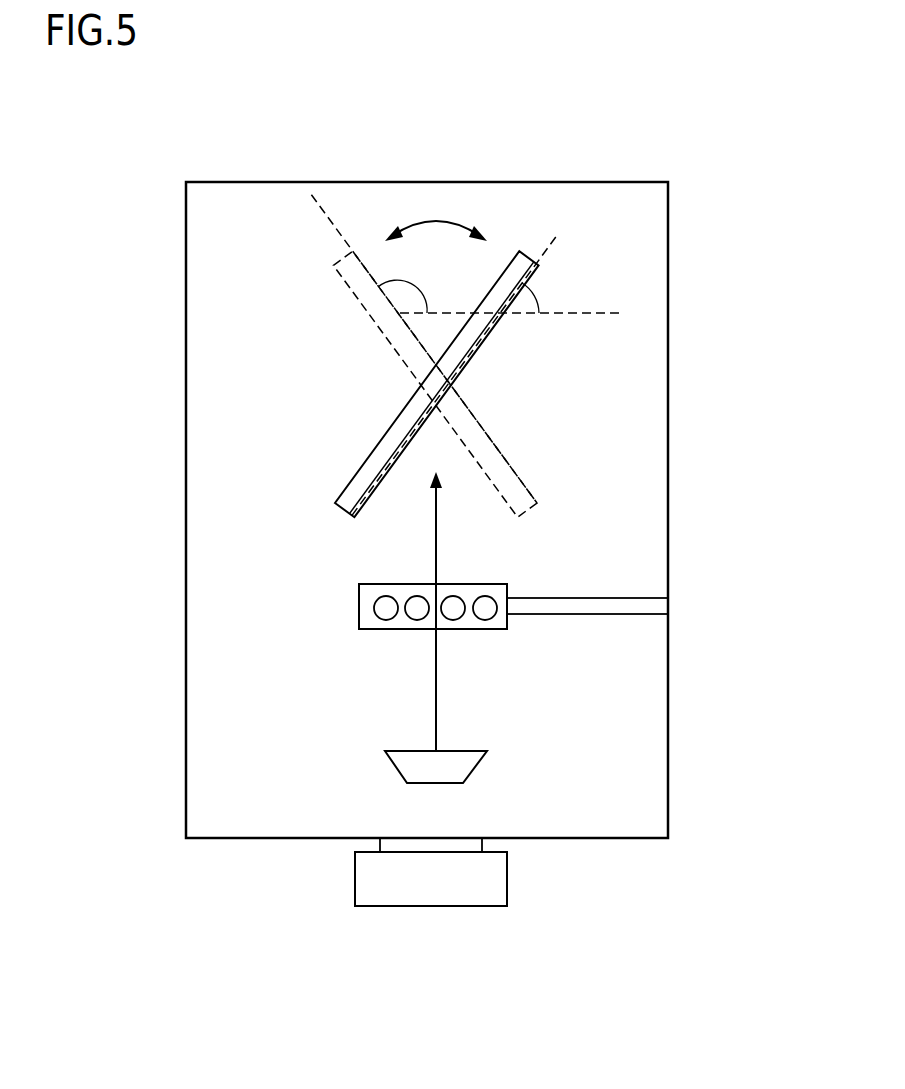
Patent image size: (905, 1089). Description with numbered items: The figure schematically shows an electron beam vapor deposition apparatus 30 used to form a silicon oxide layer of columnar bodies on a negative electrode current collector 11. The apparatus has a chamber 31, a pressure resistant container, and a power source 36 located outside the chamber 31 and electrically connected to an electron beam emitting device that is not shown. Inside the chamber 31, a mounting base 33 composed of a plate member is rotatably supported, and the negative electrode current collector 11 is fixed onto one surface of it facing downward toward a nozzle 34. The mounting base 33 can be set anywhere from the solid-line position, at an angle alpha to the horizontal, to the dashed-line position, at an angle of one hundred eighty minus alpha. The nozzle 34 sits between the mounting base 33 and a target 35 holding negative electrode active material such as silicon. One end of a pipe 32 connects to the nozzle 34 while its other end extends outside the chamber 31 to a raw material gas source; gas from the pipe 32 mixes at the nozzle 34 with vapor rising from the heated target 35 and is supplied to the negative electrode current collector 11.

The vapor deposition apparatus 30 is at (627, 150).
The chamber 31 is at (669, 303).
The pipe 32 is at (623, 607).
The mounting base 33 is at (518, 266).
The negative electrode current collector 11 is at (350, 517).
The nozzle 34 is at (477, 629).
The target 35 is at (457, 767).
The power source 36 is at (373, 878).